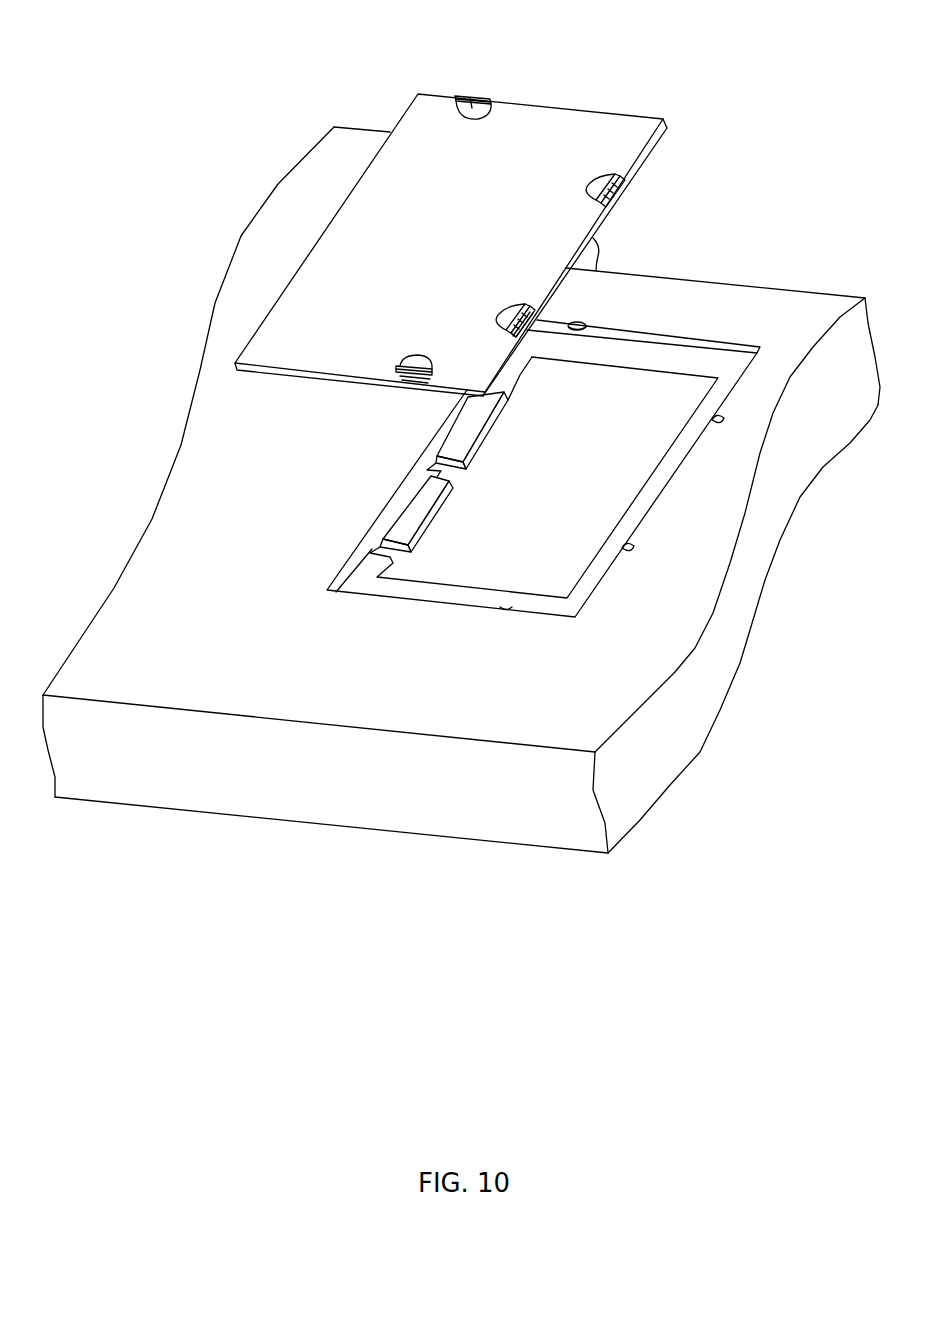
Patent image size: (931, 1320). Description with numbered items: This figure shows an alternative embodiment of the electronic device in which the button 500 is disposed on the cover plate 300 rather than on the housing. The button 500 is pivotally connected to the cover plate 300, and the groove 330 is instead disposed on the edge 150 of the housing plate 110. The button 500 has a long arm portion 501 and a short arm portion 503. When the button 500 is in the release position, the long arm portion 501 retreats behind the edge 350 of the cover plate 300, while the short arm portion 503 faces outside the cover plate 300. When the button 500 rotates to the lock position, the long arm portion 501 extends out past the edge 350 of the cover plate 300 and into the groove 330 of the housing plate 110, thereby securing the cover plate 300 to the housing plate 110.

The housing plate 110 is at (690, 555).
The edge of the housing plate 150 is at (667, 340).
The cover plate 300 is at (530, 127).
The groove 330 is at (578, 320).
The edge of the cover plate 350 is at (663, 130).
The button 500 is at (470, 97).
The long arm portion 501 is at (507, 320).
The short arm portion 503 is at (528, 332).